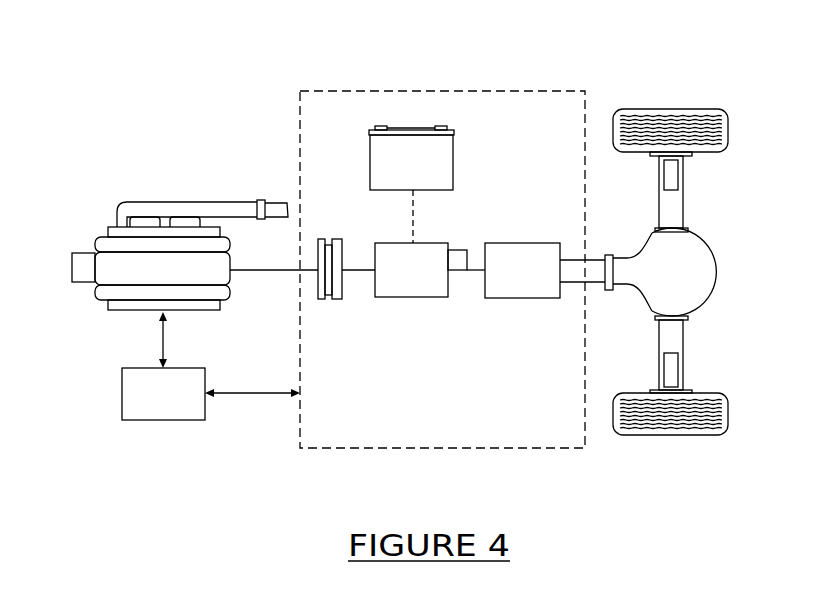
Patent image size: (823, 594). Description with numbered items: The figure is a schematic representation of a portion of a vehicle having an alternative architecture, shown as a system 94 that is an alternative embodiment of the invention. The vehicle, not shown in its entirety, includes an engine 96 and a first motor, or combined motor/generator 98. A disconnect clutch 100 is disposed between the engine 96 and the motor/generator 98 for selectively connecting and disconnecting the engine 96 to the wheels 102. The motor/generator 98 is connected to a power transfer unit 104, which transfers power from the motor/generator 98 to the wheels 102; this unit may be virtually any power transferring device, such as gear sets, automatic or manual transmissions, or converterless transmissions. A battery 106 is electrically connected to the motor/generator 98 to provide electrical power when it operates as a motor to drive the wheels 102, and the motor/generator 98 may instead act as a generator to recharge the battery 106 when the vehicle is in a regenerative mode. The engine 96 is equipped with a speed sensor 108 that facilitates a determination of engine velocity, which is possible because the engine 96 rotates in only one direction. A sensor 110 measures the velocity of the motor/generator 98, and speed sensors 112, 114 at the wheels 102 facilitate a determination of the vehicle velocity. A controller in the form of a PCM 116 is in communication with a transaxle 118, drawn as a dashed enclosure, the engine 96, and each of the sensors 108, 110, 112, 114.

The system 94 is at (243, 66).
The engine 96 is at (117, 312).
The motor/generator 98 is at (413, 297).
The disconnect clutch 100 is at (330, 300).
The wheels 102 is at (668, 109).
The power transfer unit 104 is at (500, 298).
The battery 106 is at (455, 162).
The speed sensor 108 is at (72, 268).
The sensor 110 is at (460, 250).
The speed sensor 112 is at (678, 174).
The speed sensor 114 is at (678, 366).
The PCM 116 is at (162, 420).
The transaxle 118 is at (386, 84).